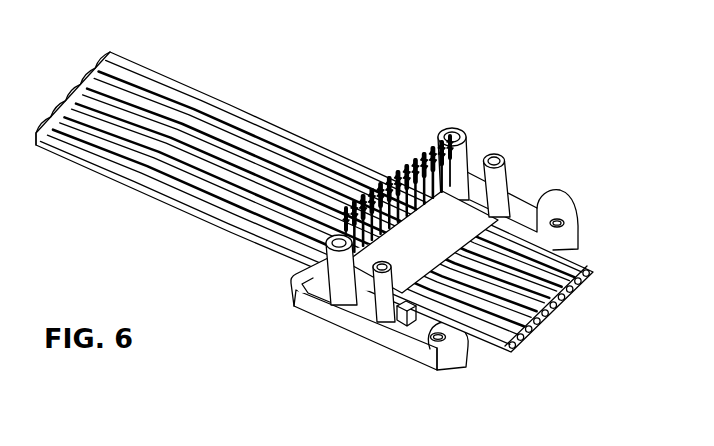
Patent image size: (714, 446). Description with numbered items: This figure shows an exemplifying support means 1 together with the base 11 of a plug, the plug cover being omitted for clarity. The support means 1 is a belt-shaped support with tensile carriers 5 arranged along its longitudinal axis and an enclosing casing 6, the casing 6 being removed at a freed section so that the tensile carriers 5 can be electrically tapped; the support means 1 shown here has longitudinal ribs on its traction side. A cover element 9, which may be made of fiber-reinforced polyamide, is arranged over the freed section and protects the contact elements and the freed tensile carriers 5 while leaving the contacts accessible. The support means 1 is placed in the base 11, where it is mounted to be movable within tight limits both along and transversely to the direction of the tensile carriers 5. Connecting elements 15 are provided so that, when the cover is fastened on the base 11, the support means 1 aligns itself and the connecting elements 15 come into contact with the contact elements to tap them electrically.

The support means 1 is at (221, 66).
The tensile carriers 5 is at (587, 288).
The casing 6 is at (494, 345).
The cover element 9 is at (462, 215).
The base 11 is at (335, 313).
The connecting elements 15 is at (418, 137).